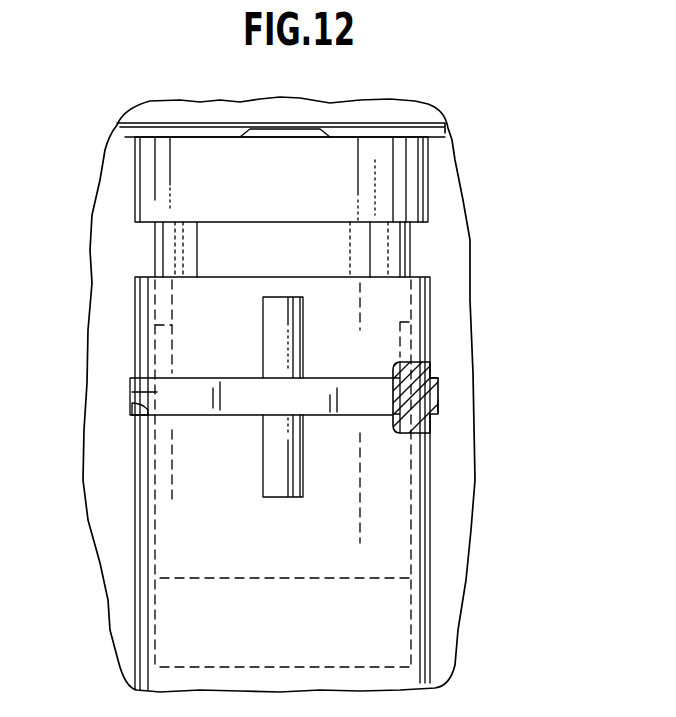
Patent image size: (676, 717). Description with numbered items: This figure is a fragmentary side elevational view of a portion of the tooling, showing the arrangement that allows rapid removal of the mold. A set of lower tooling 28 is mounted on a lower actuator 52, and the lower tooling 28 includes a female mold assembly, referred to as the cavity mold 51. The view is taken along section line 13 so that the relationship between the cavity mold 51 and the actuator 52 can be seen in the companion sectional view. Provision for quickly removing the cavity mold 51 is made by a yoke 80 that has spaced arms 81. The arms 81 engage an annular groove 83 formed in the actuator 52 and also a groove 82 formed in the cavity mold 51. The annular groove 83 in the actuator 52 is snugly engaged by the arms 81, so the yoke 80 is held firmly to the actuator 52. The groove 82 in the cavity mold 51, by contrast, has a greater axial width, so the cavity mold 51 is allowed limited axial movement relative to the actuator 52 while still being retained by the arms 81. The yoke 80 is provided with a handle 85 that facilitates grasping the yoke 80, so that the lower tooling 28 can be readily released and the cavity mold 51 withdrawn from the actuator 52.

The section line 13- 13 is at (525, 133).
The lower tooling 28 is at (415, 248).
The cavity mold 51 is at (135, 188).
The lower actuator 52 is at (137, 608).
The yoke 80 is at (444, 394).
The arm 81 is at (155, 392).
The groove 82 is at (144, 355).
The annular groove 83 is at (145, 412).
The handle 85 is at (283, 497).